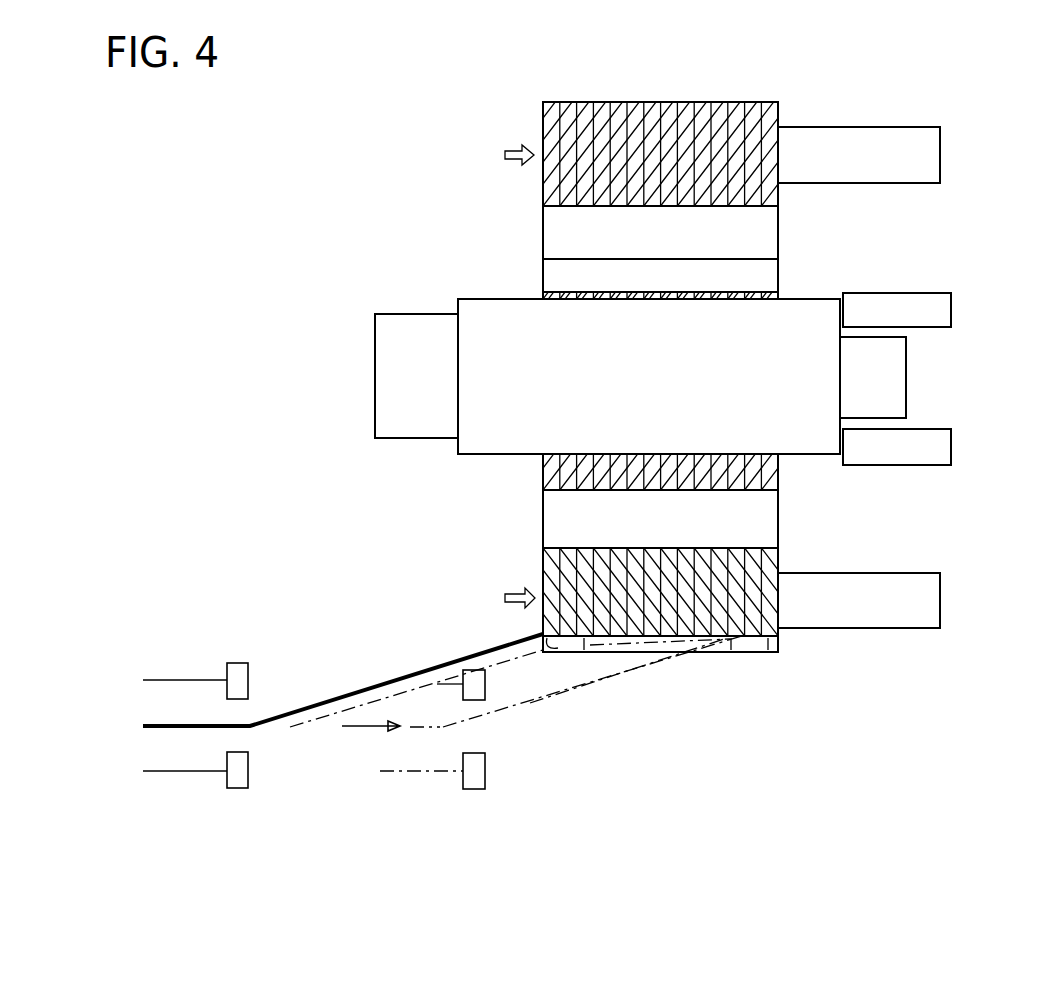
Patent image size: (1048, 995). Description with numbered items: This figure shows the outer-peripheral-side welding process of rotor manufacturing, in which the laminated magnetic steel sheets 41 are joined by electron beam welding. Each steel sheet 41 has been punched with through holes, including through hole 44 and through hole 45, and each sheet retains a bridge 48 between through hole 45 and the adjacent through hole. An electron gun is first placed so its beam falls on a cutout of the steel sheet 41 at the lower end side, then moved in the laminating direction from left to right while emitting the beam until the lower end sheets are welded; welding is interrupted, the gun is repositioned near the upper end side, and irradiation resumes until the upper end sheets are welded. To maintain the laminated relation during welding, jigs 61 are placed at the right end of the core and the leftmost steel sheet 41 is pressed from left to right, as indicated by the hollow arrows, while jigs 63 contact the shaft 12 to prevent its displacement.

The shaft 12 is at (627, 393).
The magnetic steel sheet 41 is at (758, 102).
The through hole 44 is at (586, 207).
The through hole 45 is at (587, 260).
The bridge 48 is at (718, 292).
The jig 61 is at (933, 160).
The jig 63 is at (940, 308).